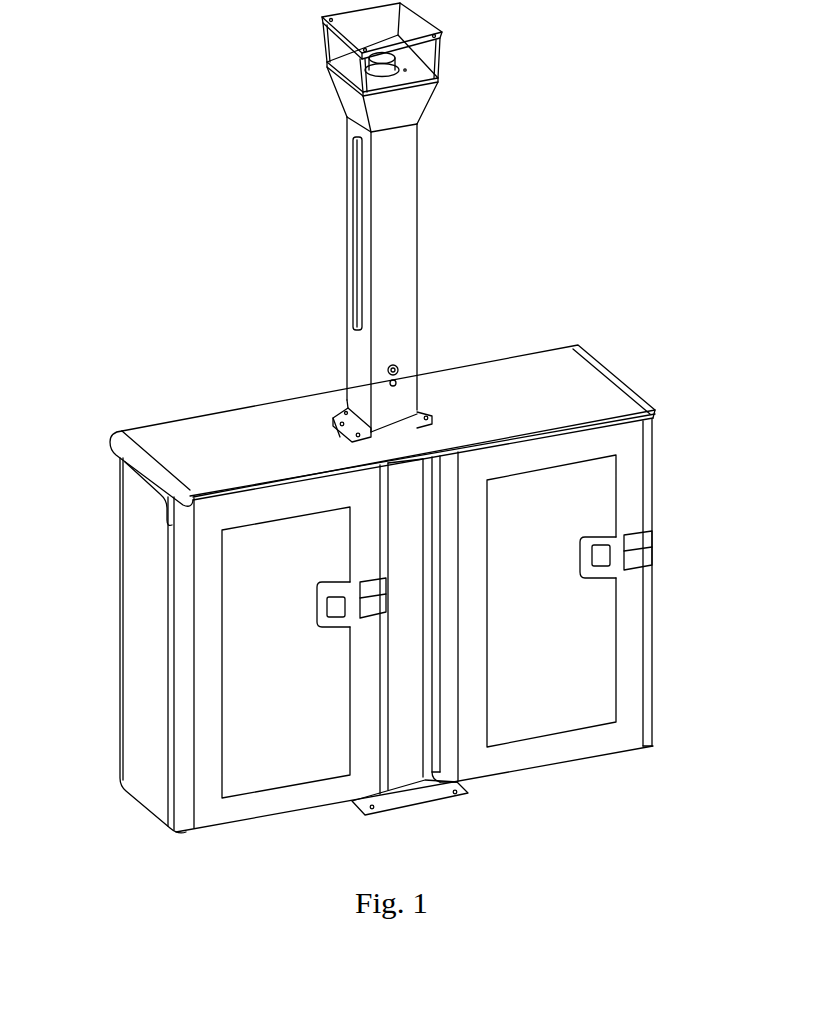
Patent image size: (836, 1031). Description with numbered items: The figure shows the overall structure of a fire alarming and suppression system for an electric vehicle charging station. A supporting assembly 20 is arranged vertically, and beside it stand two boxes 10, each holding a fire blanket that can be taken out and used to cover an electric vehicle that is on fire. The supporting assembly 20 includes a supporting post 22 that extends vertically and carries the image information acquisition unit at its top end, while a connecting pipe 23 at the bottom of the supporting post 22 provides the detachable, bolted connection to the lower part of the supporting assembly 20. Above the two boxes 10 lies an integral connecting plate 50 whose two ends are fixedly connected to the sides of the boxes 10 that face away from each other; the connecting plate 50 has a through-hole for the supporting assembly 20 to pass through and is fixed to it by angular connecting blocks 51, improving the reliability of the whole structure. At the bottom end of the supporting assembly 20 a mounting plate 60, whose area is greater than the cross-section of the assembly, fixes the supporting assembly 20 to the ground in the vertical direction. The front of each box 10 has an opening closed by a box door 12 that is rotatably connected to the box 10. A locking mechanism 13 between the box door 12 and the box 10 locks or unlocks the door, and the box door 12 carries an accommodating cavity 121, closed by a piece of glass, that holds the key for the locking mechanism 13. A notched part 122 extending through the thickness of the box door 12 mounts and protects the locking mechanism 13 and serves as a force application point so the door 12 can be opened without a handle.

The box 10 is at (112, 605).
The box door 12 is at (268, 805).
The locking mechanism 13 is at (360, 598).
The accommodating cavity 121 is at (336, 608).
The notched part 122 is at (378, 598).
The supporting assembly 20 is at (420, 727).
The supporting post 22 is at (402, 244).
The connecting pipe 23 is at (426, 416).
The connecting plate 50 is at (206, 428).
The angular connecting block 51 is at (335, 427).
The mounting plate 60 is at (420, 808).